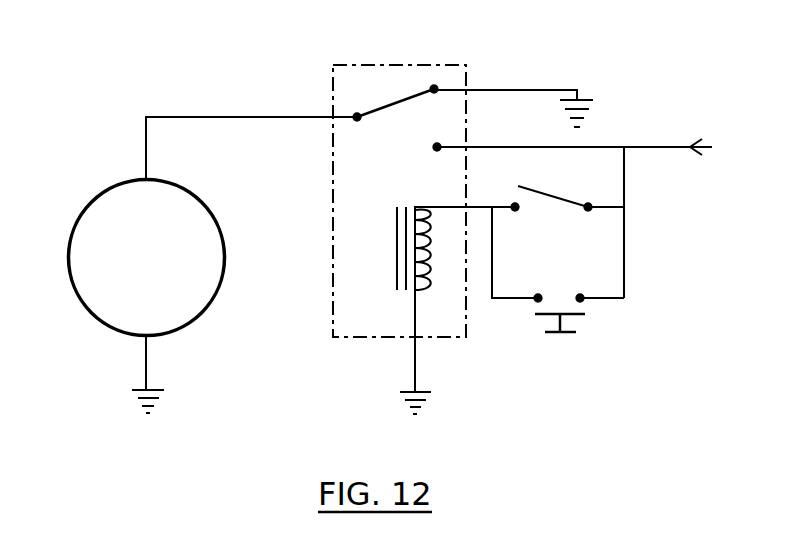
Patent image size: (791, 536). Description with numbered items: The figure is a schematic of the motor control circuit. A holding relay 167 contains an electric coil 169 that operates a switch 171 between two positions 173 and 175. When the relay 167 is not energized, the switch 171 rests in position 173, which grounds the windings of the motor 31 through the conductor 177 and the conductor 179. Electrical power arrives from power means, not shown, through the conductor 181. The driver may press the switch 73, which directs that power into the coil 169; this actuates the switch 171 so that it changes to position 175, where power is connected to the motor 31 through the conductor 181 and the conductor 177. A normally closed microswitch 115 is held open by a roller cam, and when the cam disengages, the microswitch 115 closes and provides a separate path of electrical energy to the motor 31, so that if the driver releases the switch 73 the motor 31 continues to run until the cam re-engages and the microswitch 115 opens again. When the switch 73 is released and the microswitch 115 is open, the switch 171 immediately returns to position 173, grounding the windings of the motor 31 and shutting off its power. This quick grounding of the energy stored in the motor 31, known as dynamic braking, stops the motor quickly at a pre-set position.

The motor 31 is at (85, 302).
The conductor 177 is at (192, 117).
The holding relay 167 is at (333, 70).
The switch 171 is at (397, 107).
The position 173 is at (434, 85).
The conductor 179 is at (540, 90).
The position 175 is at (435, 149).
The conductor 181 is at (652, 146).
The electric coil 169 is at (397, 272).
The microswitch 115 is at (590, 208).
The switch 73 is at (562, 321).